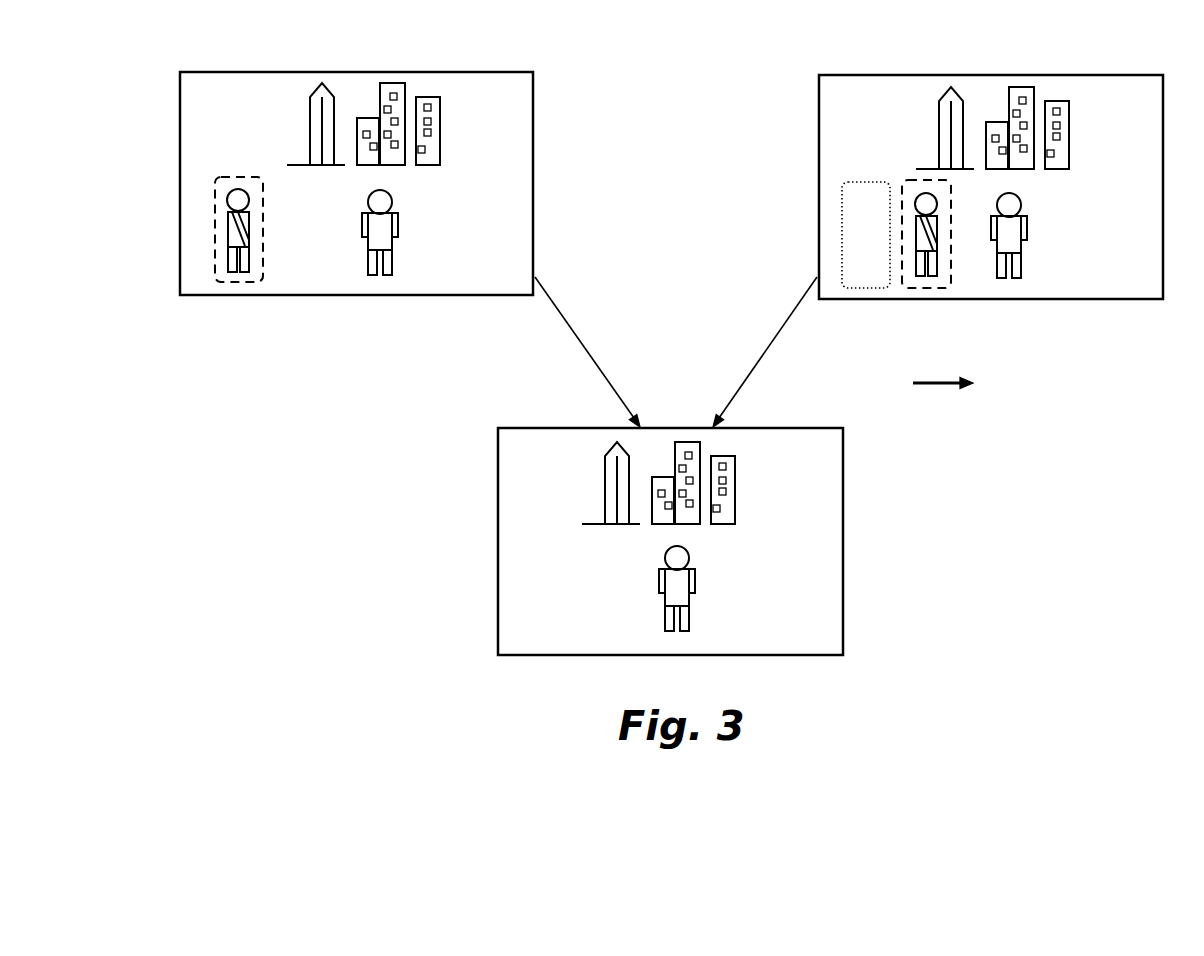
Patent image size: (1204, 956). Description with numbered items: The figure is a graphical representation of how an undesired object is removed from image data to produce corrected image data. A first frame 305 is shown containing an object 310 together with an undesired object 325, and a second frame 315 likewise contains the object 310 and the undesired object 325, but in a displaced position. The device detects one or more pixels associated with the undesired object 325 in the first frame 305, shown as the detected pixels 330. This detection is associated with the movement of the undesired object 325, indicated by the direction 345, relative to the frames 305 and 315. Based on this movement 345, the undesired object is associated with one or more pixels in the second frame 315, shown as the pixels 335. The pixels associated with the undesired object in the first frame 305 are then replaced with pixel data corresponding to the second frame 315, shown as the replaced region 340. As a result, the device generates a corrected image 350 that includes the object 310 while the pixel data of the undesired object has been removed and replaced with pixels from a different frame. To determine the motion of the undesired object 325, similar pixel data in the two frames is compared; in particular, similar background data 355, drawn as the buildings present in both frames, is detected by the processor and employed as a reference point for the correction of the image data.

The first frame 305 is at (282, 72).
The object 310 is at (402, 225).
The second frame 315 is at (920, 75).
The undesired object 325 is at (250, 200).
The detected pixels of undesired object 330 is at (217, 182).
The pixels associated with undesired object in second frame 335 is at (912, 286).
The replaced pixel region 340 is at (865, 288).
The direction of movement 345 is at (939, 373).
The corrected image 350 is at (497, 495).
The similar background data 355 is at (430, 72).